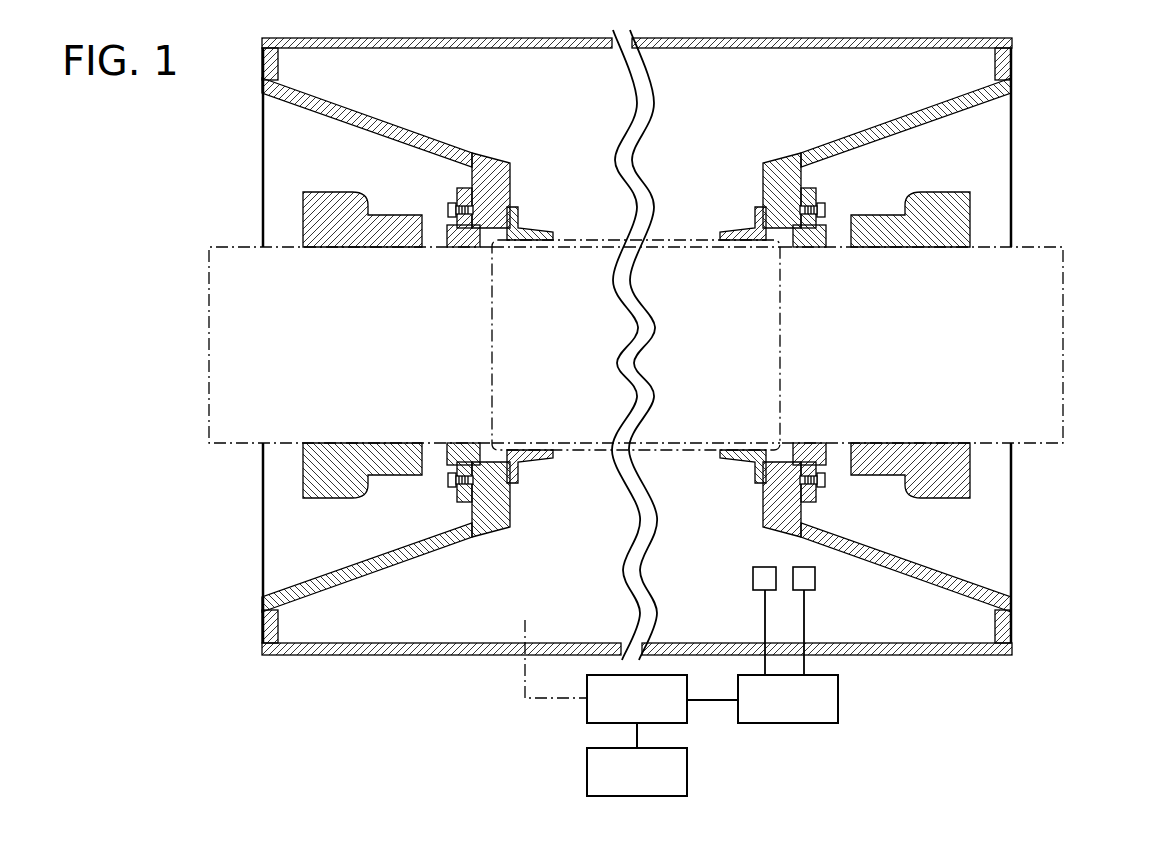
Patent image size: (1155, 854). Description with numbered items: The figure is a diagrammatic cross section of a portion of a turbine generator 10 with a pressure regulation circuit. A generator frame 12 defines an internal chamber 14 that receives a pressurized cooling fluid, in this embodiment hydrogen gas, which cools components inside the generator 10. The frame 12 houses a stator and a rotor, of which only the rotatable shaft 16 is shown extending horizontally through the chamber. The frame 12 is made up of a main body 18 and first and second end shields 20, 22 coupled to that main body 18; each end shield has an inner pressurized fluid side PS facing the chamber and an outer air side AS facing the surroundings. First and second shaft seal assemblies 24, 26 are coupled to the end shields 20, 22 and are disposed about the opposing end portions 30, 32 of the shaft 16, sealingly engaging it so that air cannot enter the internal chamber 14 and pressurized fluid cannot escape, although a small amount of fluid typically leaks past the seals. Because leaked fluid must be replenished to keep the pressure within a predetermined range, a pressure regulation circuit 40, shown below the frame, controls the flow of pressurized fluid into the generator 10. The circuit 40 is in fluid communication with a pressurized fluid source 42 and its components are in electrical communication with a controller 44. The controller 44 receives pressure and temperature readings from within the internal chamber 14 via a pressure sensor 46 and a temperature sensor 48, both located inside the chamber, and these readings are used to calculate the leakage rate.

The turbine generator 10 is at (967, 689).
The generator frame 12 is at (1012, 58).
The internal chamber 14 is at (716, 605).
The rotatable shaft 16 is at (912, 360).
The main body 18 is at (877, 652).
The first end shield 20 is at (437, 140).
The second end shield 22 is at (890, 120).
The first shaft seal assembly 24 is at (445, 194).
The second shaft seal assembly 26 is at (827, 192).
The first end portion 30 is at (209, 350).
The second end portion 32 is at (1063, 349).
The pressure regulation circuit 40 is at (652, 712).
The pressurized fluid source 42 is at (652, 783).
The controller 44 is at (803, 712).
The pressure sensor 46 is at (763, 566).
The temperature sensor 48 is at (815, 580).
The pressurized fluid side PS is at (388, 122).
The air side AS is at (300, 108).